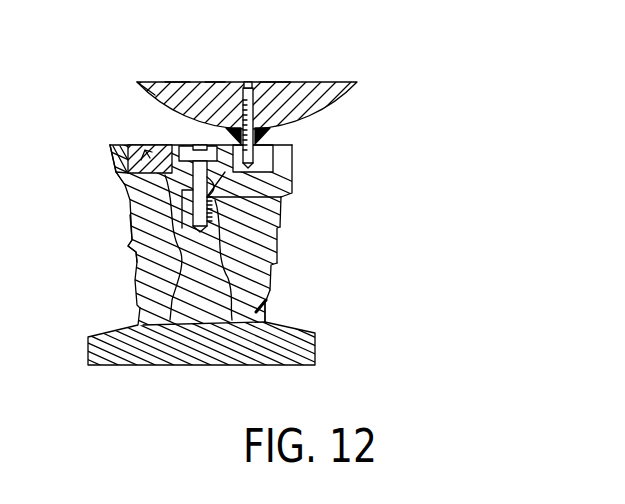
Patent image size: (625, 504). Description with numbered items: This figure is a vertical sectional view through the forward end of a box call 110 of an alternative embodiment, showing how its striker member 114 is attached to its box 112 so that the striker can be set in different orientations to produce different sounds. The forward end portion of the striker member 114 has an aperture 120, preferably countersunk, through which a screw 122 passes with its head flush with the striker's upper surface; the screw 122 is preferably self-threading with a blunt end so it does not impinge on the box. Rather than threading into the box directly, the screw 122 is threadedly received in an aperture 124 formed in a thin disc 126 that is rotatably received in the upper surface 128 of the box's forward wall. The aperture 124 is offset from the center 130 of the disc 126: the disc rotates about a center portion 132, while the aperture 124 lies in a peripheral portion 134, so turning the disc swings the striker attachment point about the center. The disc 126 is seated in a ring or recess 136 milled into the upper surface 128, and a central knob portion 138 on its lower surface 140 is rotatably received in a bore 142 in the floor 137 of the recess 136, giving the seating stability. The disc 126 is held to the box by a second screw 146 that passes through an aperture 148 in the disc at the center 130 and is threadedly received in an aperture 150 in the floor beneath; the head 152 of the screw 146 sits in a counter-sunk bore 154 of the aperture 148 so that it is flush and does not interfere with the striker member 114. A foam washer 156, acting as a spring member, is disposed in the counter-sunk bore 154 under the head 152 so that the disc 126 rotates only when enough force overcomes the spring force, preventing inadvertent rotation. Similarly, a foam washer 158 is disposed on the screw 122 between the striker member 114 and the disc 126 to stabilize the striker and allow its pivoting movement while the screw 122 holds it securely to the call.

The box call 110 is at (343, 46).
The box 112 is at (316, 348).
The striker member 114 is at (357, 82).
The aperture 120 is at (272, 85).
The screw 122 is at (252, 82).
The aperture 124 is at (292, 152).
The disc 126 is at (118, 145).
The upper surface 128 is at (130, 150).
The center 130 is at (148, 92).
The center portion 132 is at (278, 233).
The peripheral portion 134 is at (272, 132).
The recess 136 is at (170, 166).
The floor 137 is at (175, 138).
The knob portion 138 is at (130, 250).
The lower surface 140 is at (292, 180).
The bore 142 is at (272, 270).
The screw 146 is at (178, 81).
The aperture 148 is at (266, 305).
The aperture 150 is at (134, 280).
The head 152 is at (195, 118).
The counter-sunk bore 154 is at (280, 212).
The foam washer 156 is at (132, 214).
The foam washer 158 is at (214, 81).